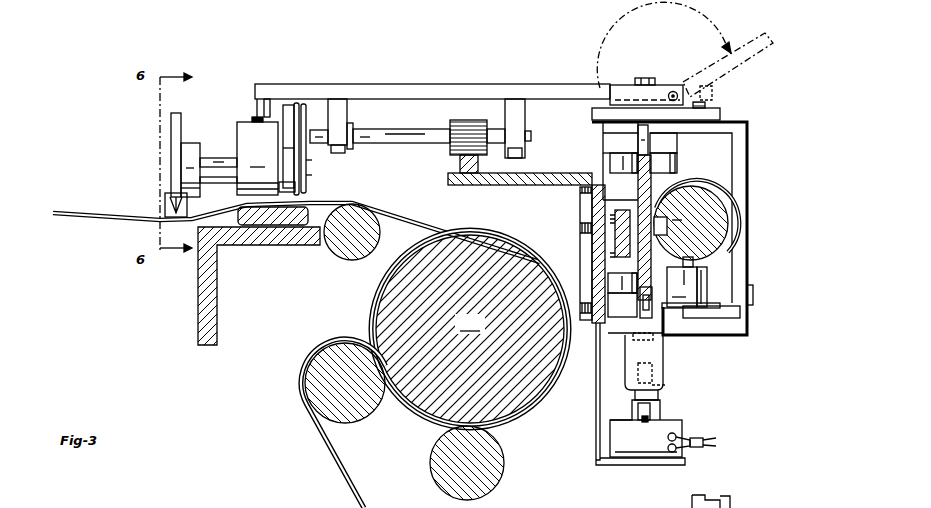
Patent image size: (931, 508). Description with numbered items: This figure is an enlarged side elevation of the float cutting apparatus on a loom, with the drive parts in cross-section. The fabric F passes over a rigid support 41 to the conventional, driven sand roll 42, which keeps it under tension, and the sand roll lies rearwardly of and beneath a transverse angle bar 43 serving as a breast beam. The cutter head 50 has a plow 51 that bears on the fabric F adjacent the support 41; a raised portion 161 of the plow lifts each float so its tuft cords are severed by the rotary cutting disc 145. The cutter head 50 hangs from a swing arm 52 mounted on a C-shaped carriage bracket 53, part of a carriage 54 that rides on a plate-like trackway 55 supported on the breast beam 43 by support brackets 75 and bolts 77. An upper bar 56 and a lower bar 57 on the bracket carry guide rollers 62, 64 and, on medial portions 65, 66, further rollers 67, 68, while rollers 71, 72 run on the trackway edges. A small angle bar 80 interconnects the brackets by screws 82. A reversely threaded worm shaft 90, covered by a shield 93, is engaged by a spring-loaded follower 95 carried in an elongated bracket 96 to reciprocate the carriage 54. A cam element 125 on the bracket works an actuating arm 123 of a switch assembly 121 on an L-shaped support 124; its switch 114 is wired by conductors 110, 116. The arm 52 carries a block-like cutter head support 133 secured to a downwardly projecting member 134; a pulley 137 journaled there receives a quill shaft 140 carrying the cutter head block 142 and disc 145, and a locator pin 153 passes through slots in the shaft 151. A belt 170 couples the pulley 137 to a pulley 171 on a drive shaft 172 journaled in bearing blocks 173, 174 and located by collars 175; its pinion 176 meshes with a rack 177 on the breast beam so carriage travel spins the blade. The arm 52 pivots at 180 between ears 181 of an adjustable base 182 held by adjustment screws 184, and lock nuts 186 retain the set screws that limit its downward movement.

The fabric F is at (68, 213).
The rigid support 41 is at (299, 234).
The sand roll 42 is at (470, 329).
The transverse bar 43 is at (498, 184).
The cutter head 50 is at (166, 150).
The plow 51 is at (160, 221).
The swing arm 52 is at (435, 84).
The carriage bracket 53 is at (748, 209).
The carriage 54 is at (754, 160).
The trackway 55 is at (638, 187).
The elongated bar 56 is at (676, 143).
The bar 57 is at (620, 312).
The guide roller 62 is at (678, 164).
The guide roller 64 is at (608, 280).
The medial portion 65 is at (612, 142).
The medial portion 66 is at (688, 310).
The guide roller 67 is at (612, 165).
The guide roller 68 is at (660, 318).
The roller 71 is at (642, 126).
The roller 72 is at (632, 335).
The support bracket 75 is at (592, 264).
The bolt 77 is at (615, 227).
The rigid frame member 80 is at (740, 311).
The screw 82 is at (753, 291).
The worm shaft 90 is at (688, 243).
The shield 93 is at (718, 205).
The follower 95 is at (703, 266).
The elongated bracket 96 is at (720, 318).
The conductor 110 is at (712, 436).
The switch 114 is at (645, 422).
The conductor 116 is at (718, 451).
The switch assembly 121 is at (703, 413).
The actuating arm 123 is at (668, 385).
The L-shaped support 124 is at (596, 424).
The cam element 125 is at (660, 366).
The cutter head support 133 is at (257, 158).
The downwardly projecting member 134 is at (269, 99).
The pulley 137 is at (303, 183).
The quill shaft 140 is at (204, 162).
The cutter head block 142 is at (181, 113).
The rotary cutting disc 145 is at (166, 203).
The shaft 151 is at (218, 157).
The locator pin 153 is at (252, 117).
The raised portion 161 is at (189, 209).
The belt 170 is at (305, 167).
The pulley 171 is at (304, 106).
The drive shaft 172 is at (386, 142).
The bearing block 173 is at (338, 99).
The bearing block 174 is at (516, 99).
The collar 175 is at (355, 124).
The pinion 176 is at (450, 140).
The rack 177 is at (480, 166).
The pivot 180 is at (673, 91).
The upstanding ear 181 is at (632, 80).
The adjustable base 182 is at (722, 114).
The adjustment screw 184 is at (706, 105).
The lock nut 186 is at (648, 78).